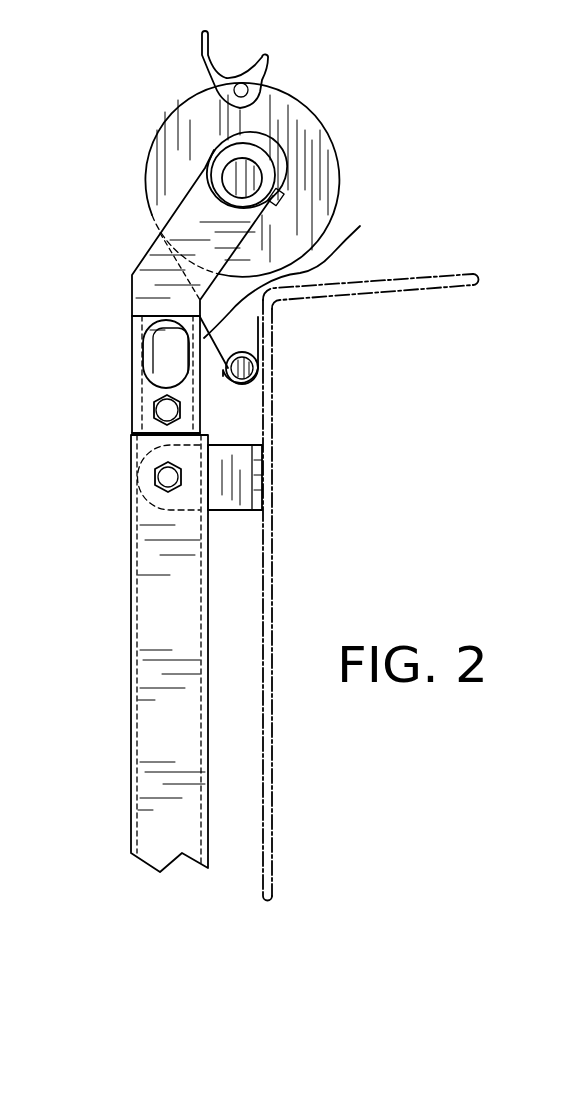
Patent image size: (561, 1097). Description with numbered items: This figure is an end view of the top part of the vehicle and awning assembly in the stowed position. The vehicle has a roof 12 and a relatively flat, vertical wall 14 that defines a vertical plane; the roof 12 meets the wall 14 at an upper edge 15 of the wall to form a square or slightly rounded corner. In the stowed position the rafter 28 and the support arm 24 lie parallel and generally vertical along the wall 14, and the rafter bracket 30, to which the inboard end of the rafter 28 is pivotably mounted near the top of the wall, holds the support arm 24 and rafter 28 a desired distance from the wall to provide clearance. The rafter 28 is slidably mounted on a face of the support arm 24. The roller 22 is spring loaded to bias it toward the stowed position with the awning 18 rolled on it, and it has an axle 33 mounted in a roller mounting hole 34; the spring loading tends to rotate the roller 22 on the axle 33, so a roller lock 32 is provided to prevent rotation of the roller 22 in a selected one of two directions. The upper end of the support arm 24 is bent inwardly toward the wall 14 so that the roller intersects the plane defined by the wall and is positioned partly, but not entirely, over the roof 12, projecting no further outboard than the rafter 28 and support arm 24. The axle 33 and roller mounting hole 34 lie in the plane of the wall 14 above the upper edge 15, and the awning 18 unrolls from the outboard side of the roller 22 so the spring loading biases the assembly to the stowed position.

The roof 12 is at (445, 272).
The wall 14 is at (263, 705).
The upper edge 15 is at (277, 303).
The awning 18 is at (360, 226).
The roller 22 is at (337, 150).
The support arm 24 is at (131, 388).
The rafter 28 is at (157, 635).
The rafter bracket 30 is at (235, 512).
The roller lock 32 is at (203, 60).
The axle 33 is at (218, 185).
The roller mounting hole 34 is at (218, 198).